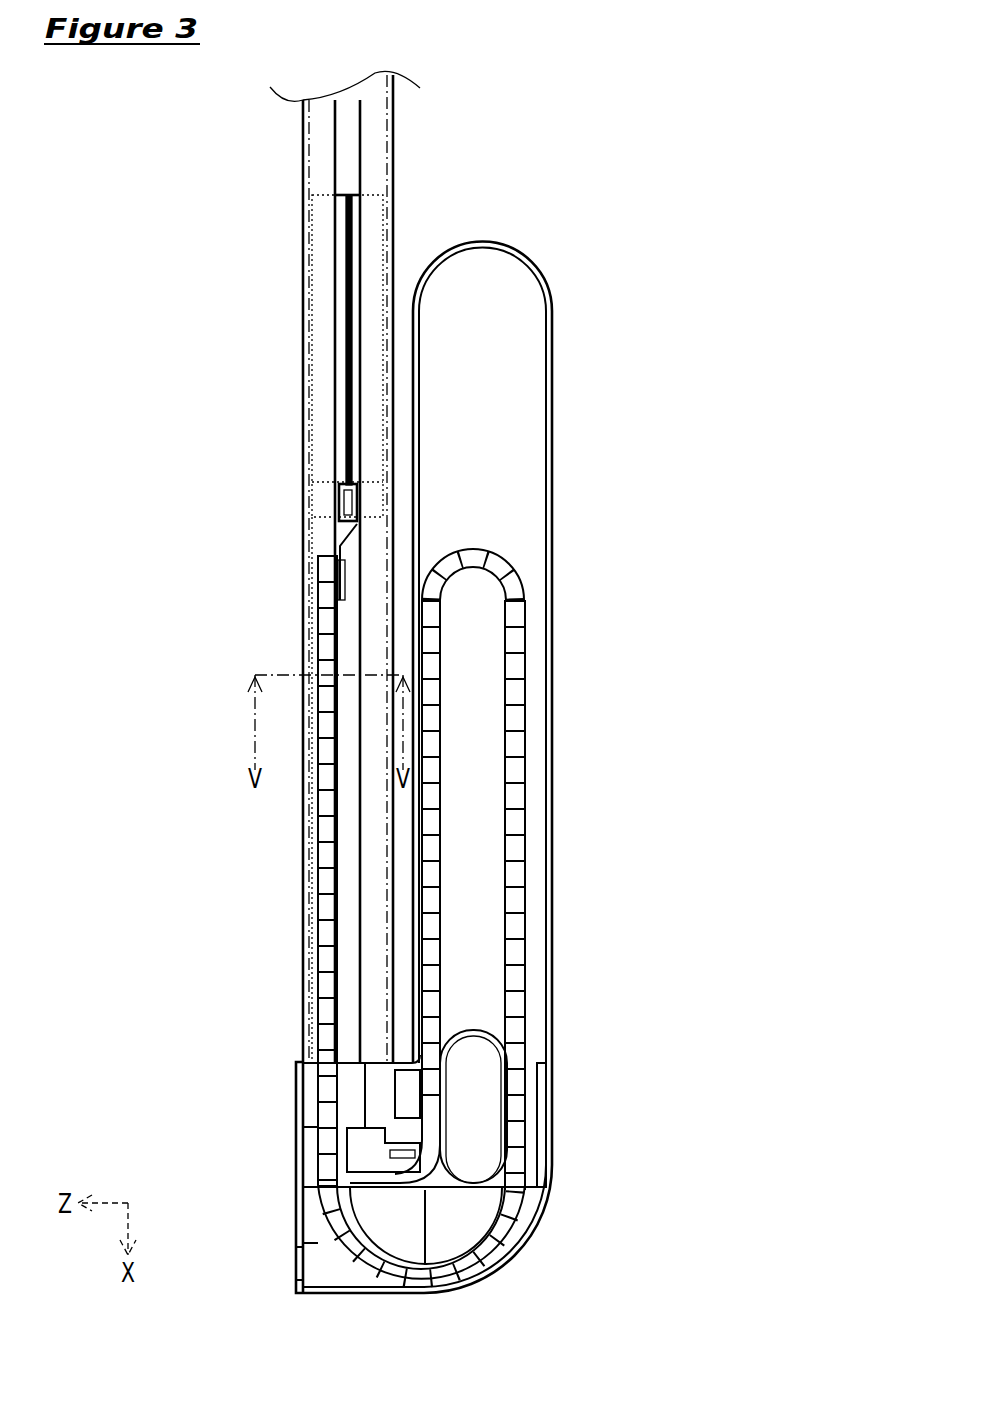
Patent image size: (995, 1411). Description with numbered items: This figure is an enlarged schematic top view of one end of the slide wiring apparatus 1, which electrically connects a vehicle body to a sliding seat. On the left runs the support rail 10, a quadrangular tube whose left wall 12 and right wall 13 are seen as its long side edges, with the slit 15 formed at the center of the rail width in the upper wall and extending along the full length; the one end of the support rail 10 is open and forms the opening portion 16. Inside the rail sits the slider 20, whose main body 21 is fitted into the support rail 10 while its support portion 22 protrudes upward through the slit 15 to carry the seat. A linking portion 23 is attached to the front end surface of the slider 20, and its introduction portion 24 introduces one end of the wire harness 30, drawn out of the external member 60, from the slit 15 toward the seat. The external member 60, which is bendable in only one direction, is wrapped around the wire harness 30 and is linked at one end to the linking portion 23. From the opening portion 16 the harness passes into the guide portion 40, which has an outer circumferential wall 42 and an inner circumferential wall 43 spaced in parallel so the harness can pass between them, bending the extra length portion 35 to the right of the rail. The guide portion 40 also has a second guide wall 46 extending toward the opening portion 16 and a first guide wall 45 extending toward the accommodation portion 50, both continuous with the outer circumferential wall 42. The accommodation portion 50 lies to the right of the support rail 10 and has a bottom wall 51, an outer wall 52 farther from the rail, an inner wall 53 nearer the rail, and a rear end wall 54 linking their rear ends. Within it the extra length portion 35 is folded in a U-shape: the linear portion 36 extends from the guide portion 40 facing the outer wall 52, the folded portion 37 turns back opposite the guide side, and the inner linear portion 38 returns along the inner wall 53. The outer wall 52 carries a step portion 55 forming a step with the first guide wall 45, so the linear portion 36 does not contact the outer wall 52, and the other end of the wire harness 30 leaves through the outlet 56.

The slide wiring apparatus 1 is at (578, 250).
The support rail 10 is at (286, 640).
The left wall 12 is at (303, 858).
The right wall 13 is at (387, 830).
The slit 15 is at (336, 180).
The opening portion 16 is at (300, 1068).
The slider 20 is at (297, 302).
The main body 21 is at (330, 440).
The support portion 22 is at (350, 360).
The linking portion 23 is at (335, 573).
The introduction portion 24 is at (345, 492).
The wire harness 30 is at (340, 503).
The extra length portion 35 is at (592, 856).
The linear portion 36 is at (525, 740).
The folded portion 37 is at (487, 560).
The inner linear portion 38 is at (440, 695).
The guide portion 40 is at (437, 1155).
The outer circumferential wall 42 is at (300, 1258).
The inner circumferential wall 43 is at (300, 1232).
The first guide wall 45 is at (540, 1110).
The second guide wall 46 is at (300, 1140).
The accommodation portion 50 is at (570, 655).
The bottom wall 51 is at (498, 358).
The outer wall 52 is at (550, 381).
The inner wall 53 is at (425, 432).
The rear end wall 54 is at (485, 242).
The step portion 55 is at (540, 1045).
The outlet 56 is at (348, 1155).
The external member 60 is at (318, 920).